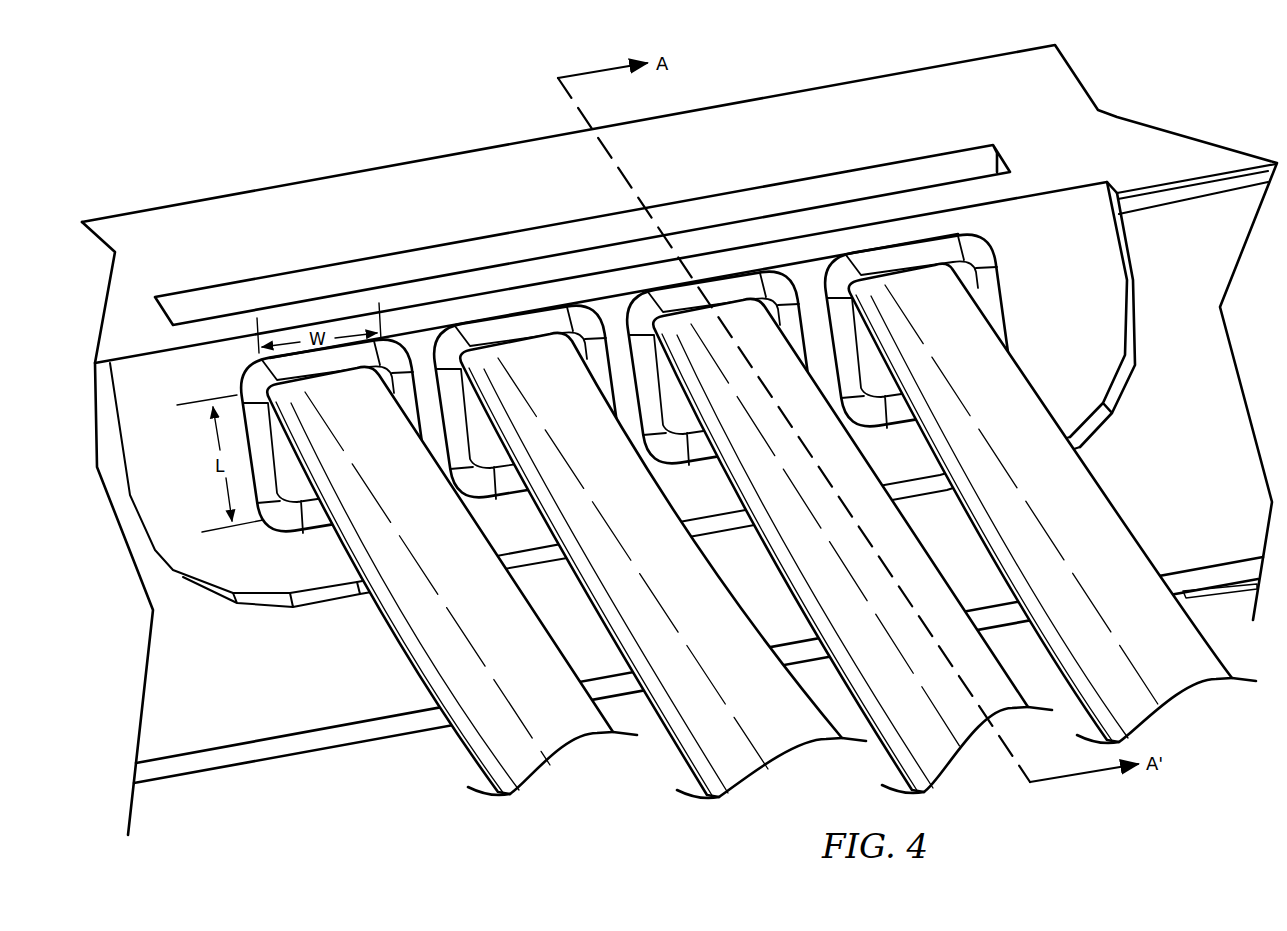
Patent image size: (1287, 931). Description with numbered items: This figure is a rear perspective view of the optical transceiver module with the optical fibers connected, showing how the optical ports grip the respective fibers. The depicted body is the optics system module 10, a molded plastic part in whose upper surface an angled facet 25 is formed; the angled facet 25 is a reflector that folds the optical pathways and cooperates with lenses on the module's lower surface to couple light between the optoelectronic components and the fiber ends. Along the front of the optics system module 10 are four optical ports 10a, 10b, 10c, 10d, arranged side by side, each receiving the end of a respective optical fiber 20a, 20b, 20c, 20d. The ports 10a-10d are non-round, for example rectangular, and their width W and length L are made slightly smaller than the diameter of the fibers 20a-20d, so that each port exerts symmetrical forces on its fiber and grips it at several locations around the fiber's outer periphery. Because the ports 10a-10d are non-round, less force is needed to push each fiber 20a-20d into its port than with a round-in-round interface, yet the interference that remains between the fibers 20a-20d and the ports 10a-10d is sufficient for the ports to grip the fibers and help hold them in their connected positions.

The optics system module 10 is at (679, 433).
The angled facet 25 is at (940, 182).
The optical port 10a is at (253, 383).
The optical port 10b is at (493, 327).
The optical port 10c is at (677, 297).
The optical port 10d is at (875, 263).
The optical fiber 20a is at (533, 670).
The optical fiber 20b is at (703, 607).
The optical fiber 20c is at (893, 553).
The optical fiber 20d is at (1012, 417).